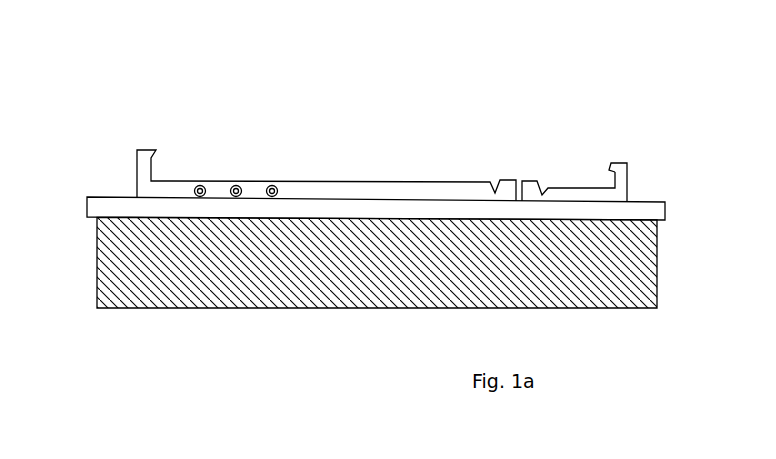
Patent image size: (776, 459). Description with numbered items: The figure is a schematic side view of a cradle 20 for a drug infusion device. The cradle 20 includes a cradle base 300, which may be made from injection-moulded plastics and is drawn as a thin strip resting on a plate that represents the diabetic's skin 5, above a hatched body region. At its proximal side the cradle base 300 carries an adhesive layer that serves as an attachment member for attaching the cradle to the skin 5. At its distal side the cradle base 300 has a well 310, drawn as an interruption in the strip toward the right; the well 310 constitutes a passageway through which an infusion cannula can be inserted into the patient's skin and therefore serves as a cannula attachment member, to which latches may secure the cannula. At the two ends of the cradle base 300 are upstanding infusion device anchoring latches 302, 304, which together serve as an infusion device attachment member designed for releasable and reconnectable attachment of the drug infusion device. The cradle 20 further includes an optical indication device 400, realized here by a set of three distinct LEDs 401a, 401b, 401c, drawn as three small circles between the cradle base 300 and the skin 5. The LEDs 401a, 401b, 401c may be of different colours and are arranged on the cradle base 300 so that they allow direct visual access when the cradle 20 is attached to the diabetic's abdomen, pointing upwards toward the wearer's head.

The cradle 20 is at (347, 87).
The diabetic's skin 5 is at (668, 209).
The cradle base 300 is at (305, 182).
The infusion device anchoring latch 302 is at (138, 153).
The infusion device anchoring latch 304 is at (627, 168).
The well 310 is at (525, 178).
The optical indication device 400 is at (232, 166).
The LED 401a is at (197, 198).
The LED 401b is at (236, 198).
The LED 401c is at (280, 198).